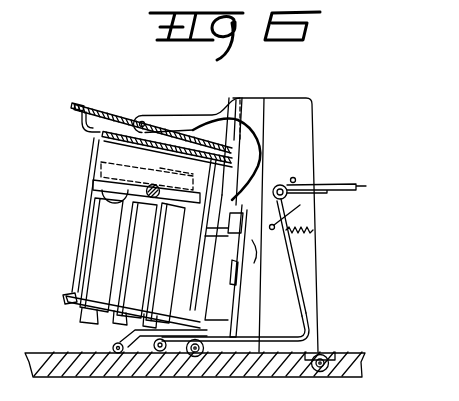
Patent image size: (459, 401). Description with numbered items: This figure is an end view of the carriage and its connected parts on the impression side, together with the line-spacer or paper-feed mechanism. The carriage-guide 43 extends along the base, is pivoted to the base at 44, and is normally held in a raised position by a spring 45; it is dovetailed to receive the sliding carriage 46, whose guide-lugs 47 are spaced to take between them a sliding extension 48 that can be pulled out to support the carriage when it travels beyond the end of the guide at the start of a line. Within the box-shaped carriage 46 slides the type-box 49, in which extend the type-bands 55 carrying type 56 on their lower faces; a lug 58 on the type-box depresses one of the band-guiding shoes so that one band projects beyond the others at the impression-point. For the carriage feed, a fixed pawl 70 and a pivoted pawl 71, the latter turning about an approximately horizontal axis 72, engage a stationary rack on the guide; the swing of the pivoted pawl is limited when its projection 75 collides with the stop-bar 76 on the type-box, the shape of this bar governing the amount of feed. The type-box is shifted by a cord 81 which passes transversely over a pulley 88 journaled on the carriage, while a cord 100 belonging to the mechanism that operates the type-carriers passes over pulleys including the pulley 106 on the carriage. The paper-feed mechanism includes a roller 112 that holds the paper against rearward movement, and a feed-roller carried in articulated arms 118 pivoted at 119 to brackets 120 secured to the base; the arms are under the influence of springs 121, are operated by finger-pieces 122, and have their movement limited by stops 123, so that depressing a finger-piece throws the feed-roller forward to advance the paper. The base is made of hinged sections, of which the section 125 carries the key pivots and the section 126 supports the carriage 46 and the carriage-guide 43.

The carriage-guide 43 is at (232, 281).
The pivot 44 is at (197, 357).
The spring 45 is at (250, 258).
The carriage 46 is at (103, 138).
The guide-lugs 47 is at (220, 228).
The sliding extension 48 is at (214, 262).
The type-box 49 is at (82, 243).
The type-bands 55 is at (132, 263).
The type 56 is at (76, 317).
The lug 58 is at (101, 195).
The fixed pawl 70 is at (226, 159).
The pivoted pawl 71 is at (225, 141).
The pivot axis 72 is at (195, 193).
The projection 75 is at (158, 156).
The stop-bar 76 is at (141, 168).
The cord 81 is at (138, 119).
The pulley 88 is at (93, 114).
The cord 100 is at (200, 134).
The pulley 106 is at (92, 134).
The roller 112 is at (115, 348).
The articulated arms 118 is at (300, 325).
The pivot 119 is at (283, 181).
The brackets 120 is at (275, 225).
The springs 121 is at (313, 229).
The finger-pieces 122 is at (352, 186).
The stops 123 is at (297, 178).
The base section 125 is at (348, 355).
The base section 126 is at (73, 368).